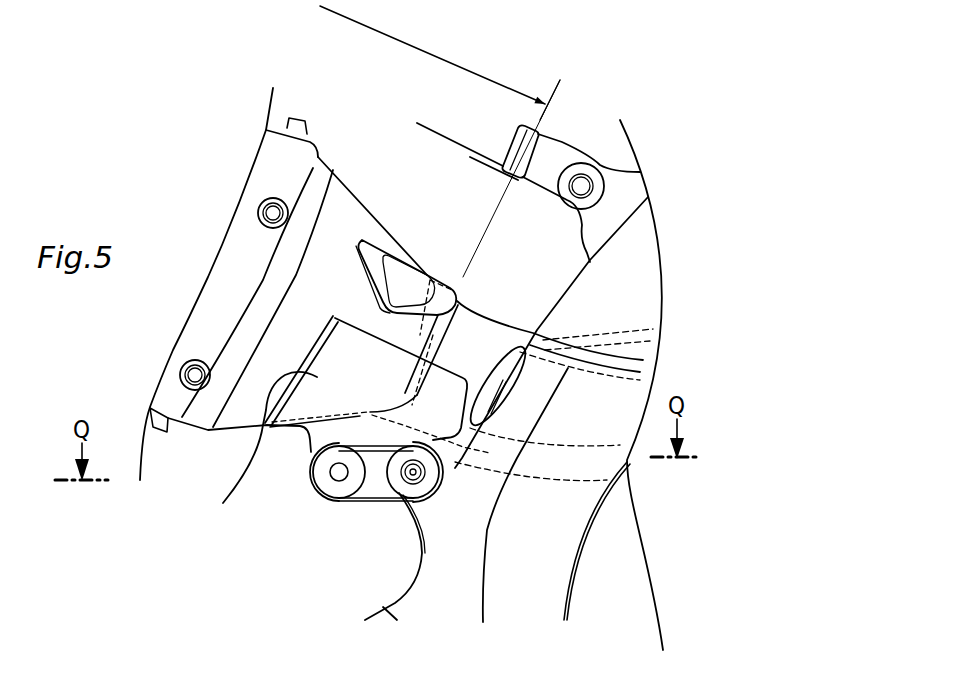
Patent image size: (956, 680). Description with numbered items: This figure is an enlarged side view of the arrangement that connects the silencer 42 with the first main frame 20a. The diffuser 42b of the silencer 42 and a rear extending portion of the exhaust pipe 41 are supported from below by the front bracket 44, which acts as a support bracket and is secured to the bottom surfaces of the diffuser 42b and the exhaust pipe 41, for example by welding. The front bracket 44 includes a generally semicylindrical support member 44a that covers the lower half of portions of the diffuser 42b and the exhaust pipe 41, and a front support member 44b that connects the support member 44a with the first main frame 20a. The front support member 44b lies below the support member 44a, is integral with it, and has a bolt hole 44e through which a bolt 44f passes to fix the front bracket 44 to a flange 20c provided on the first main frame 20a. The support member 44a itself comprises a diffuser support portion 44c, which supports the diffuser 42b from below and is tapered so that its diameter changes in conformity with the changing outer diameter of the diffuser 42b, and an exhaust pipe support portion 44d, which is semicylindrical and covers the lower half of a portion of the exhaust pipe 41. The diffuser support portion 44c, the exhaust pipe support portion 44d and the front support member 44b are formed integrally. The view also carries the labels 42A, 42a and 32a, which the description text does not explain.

The silencer 42 is at (322, 146).
The axis direction of bracket 42A is at (487, 80).
The side edge of bracket 42a is at (218, 285).
The diffuser 42b is at (347, 207).
The handle portion 32a is at (471, 156).
The exhaust pipe 41 is at (488, 326).
The front bracket 44 is at (280, 517).
The support member 44a is at (241, 500).
The front support member 44b is at (367, 488).
The diffuser support portion 44c is at (316, 489).
The exhaust pipe support portion 44d is at (314, 489).
The bolt hole 44e is at (455, 452).
The bolt 44f is at (430, 473).
The first main frame 20a is at (568, 525).
The flange 20c is at (413, 509).